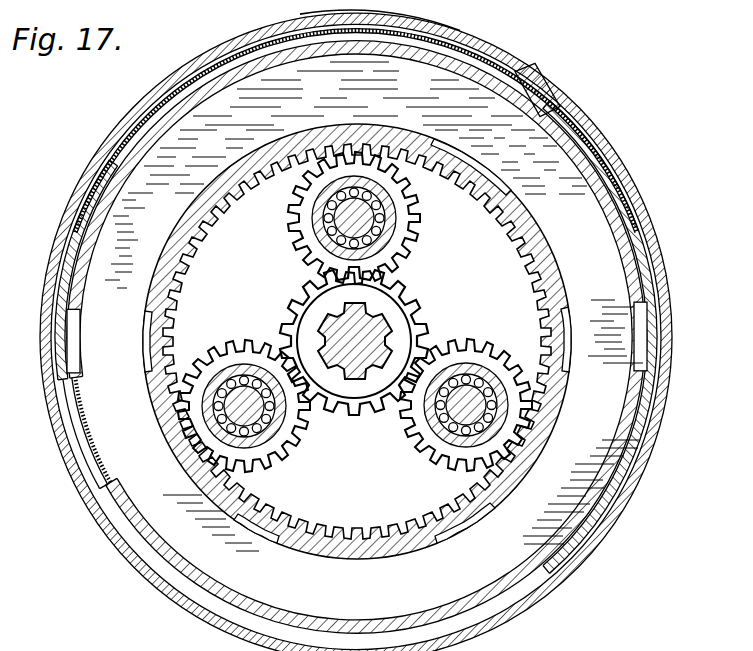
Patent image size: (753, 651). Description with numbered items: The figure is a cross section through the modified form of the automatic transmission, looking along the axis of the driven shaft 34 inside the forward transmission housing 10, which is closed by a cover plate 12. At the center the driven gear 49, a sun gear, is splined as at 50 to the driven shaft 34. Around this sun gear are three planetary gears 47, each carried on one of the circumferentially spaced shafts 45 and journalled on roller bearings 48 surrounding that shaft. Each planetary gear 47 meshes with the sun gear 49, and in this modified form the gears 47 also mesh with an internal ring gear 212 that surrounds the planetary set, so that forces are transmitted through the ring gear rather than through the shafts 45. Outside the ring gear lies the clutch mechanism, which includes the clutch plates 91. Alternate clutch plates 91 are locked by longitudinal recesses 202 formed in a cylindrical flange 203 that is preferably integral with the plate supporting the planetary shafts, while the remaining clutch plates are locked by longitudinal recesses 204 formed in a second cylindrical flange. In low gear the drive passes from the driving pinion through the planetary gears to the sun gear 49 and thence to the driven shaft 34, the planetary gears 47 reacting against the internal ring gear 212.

The forward transmission housing 10 is at (669, 324).
The cover plate 12 is at (446, 31).
The clutch plates 91 is at (576, 185).
The cylindrical flange 203 is at (557, 125).
The longitudinal recesses 202 is at (513, 84).
The longitudinal recesses 204 is at (470, 160).
The internal ring gear 212 is at (183, 282).
The driven shaft 34 is at (366, 316).
The spline 50 is at (396, 362).
The driven gear 49 is at (357, 416).
The roller bearings 48 is at (323, 238).
The shafts 45 is at (480, 378).
The planetary gears 47 is at (412, 228).